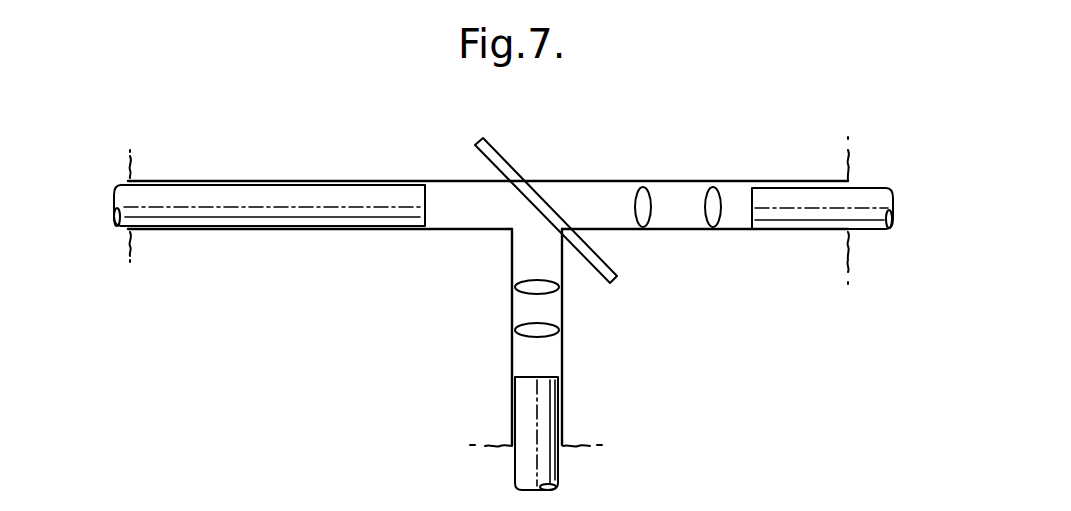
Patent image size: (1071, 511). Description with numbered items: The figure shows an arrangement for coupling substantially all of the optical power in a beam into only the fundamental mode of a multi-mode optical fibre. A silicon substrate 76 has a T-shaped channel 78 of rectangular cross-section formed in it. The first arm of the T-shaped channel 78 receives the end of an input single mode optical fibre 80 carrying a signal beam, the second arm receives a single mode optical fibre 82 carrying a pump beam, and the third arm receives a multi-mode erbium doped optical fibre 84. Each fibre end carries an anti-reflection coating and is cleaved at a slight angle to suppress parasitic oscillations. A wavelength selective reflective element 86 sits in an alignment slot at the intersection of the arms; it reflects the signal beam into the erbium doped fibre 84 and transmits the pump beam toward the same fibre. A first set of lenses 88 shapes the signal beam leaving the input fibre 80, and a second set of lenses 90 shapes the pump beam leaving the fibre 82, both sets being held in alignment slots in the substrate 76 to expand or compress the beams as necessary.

The silicon substrate 76 is at (437, 154).
The T-shaped channel 78 is at (506, 197).
The input single mode optical fibre 80 is at (542, 460).
The single mode optical fibre 82 is at (870, 195).
The multi-mode erbium doped optical fibre 84 is at (252, 195).
The wavelength selective reflective element 86 is at (508, 170).
The first set of lenses 88 is at (528, 292).
The second set of lenses 90 is at (710, 200).